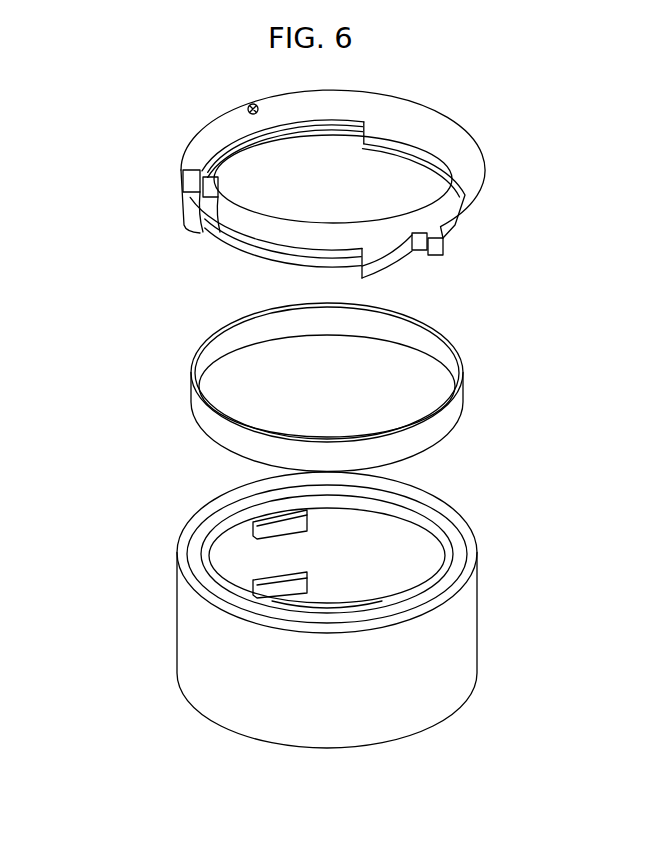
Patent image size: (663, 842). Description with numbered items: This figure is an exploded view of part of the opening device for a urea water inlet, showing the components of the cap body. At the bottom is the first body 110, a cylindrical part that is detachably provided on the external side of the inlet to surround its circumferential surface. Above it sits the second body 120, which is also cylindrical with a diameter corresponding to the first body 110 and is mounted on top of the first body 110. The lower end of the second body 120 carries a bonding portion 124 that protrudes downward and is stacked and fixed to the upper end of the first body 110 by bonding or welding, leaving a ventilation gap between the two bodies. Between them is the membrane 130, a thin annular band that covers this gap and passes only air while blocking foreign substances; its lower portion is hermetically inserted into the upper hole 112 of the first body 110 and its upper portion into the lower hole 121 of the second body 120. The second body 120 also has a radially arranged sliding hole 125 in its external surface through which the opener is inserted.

The first body 110 is at (289, 610).
The upper hole 112 is at (460, 542).
The second body 120 is at (295, 179).
The lower hole 121 is at (465, 218).
The bonding portion 124 is at (416, 141).
The sliding hole 125 is at (247, 106).
The membrane 130 is at (465, 396).